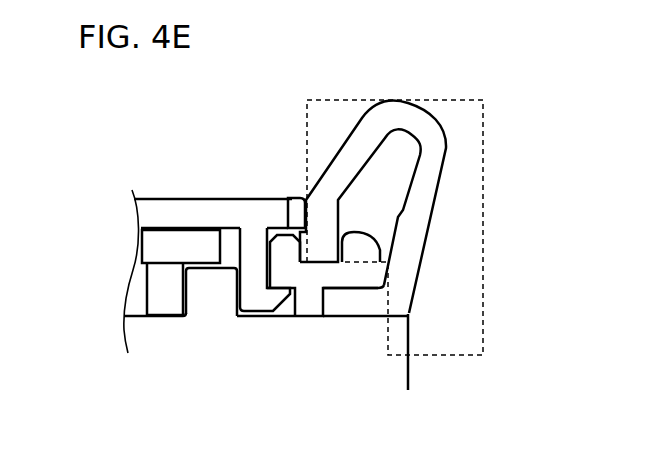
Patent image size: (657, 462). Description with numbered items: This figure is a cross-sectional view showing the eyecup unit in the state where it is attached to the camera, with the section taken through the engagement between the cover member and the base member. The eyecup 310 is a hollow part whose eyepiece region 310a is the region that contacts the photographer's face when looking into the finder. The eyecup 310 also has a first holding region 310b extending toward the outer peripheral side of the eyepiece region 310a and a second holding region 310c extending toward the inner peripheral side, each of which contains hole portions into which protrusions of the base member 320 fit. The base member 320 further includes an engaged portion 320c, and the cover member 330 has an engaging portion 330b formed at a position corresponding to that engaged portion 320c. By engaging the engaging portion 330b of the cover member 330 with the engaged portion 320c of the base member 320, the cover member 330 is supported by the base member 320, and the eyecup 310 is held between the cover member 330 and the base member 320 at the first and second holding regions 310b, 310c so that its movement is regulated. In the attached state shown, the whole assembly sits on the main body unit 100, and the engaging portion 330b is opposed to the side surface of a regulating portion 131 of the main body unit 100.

The main body unit 100 is at (410, 367).
The regulating portion 131 is at (214, 290).
The eyecup 310 is at (445, 132).
The eyepiece region 310a is at (483, 127).
The first holding region 310b is at (363, 302).
The second holding region 310c is at (158, 243).
The base member 320 is at (158, 293).
The engaged portion 320c is at (288, 198).
The cover member 330 is at (170, 199).
The engaging portion 330b is at (257, 285).